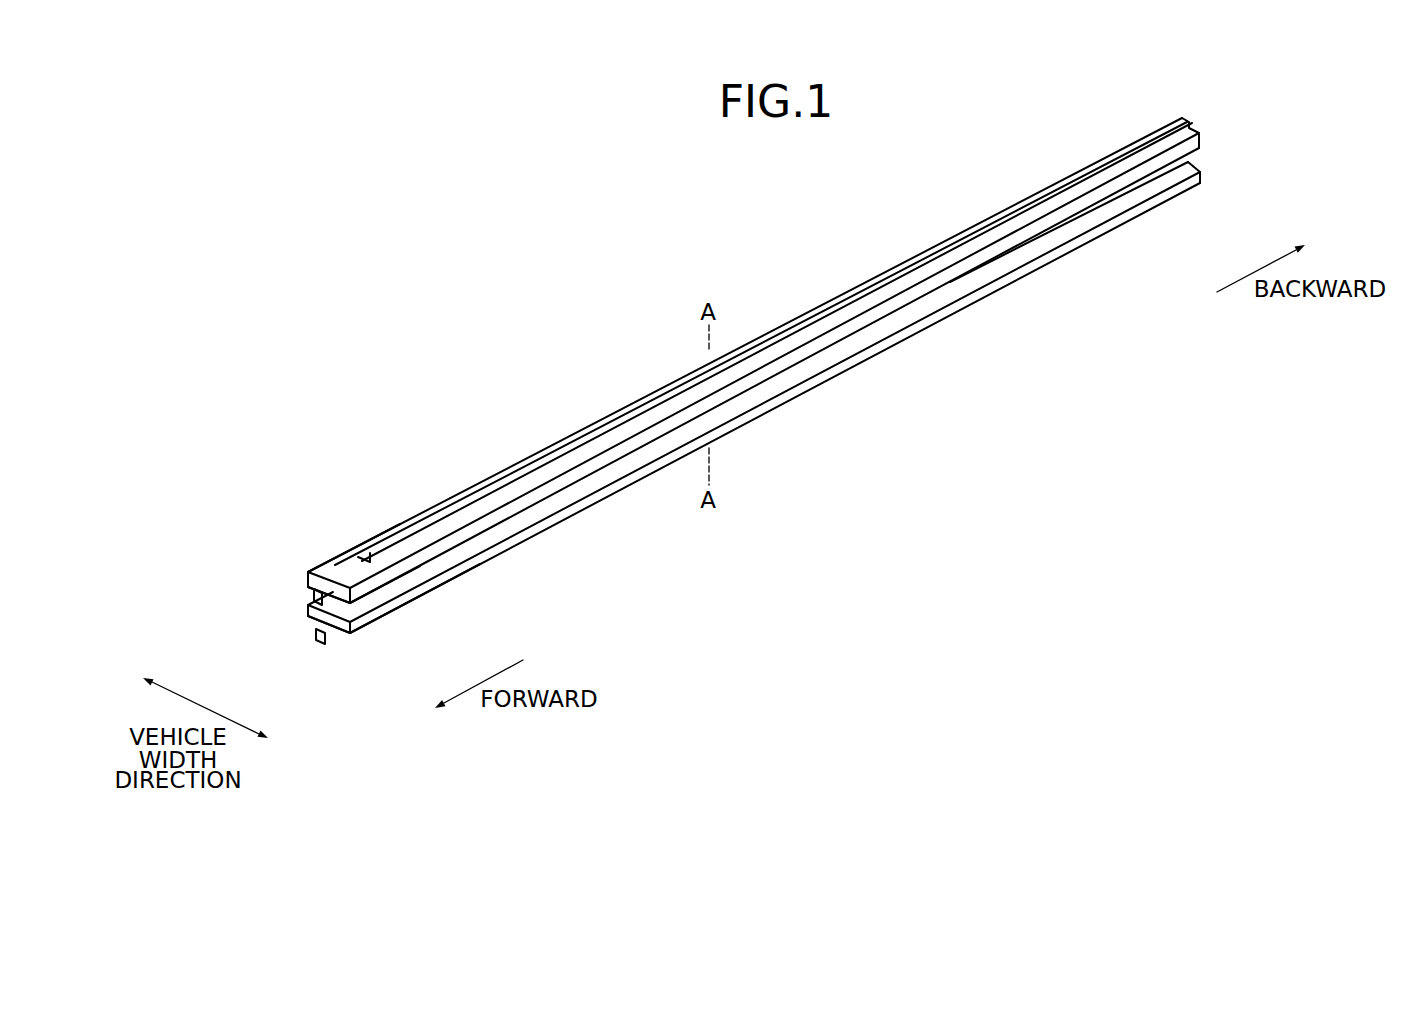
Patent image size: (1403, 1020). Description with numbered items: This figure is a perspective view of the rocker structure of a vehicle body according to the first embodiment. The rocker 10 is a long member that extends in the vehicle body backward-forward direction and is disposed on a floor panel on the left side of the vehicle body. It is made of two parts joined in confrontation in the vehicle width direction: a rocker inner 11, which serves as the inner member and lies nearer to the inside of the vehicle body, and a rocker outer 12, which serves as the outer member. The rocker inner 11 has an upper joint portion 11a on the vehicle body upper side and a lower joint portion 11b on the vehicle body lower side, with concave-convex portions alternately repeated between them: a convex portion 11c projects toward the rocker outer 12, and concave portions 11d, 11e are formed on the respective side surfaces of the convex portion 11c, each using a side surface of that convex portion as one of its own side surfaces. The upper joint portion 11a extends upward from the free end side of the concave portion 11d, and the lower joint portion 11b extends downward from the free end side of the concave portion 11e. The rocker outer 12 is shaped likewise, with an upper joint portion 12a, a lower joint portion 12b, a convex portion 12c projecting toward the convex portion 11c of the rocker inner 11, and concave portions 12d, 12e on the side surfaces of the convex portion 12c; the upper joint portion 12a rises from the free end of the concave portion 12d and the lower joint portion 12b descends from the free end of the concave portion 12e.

The rocker 10 is at (471, 383).
The rocker inner 11 is at (717, 388).
The upper joint portion 11a is at (320, 565).
The lower joint portion 11b is at (318, 633).
The convex portion 11c is at (318, 595).
The concave portion 11d is at (308, 577).
The concave portion 11e is at (312, 607).
The rocker outer 12 is at (754, 394).
The upper joint portion 12a is at (355, 565).
The lower joint portion 12b is at (332, 632).
The convex portion 12c is at (355, 602).
The concave portion 12d is at (377, 582).
The concave portion 12e is at (465, 568).